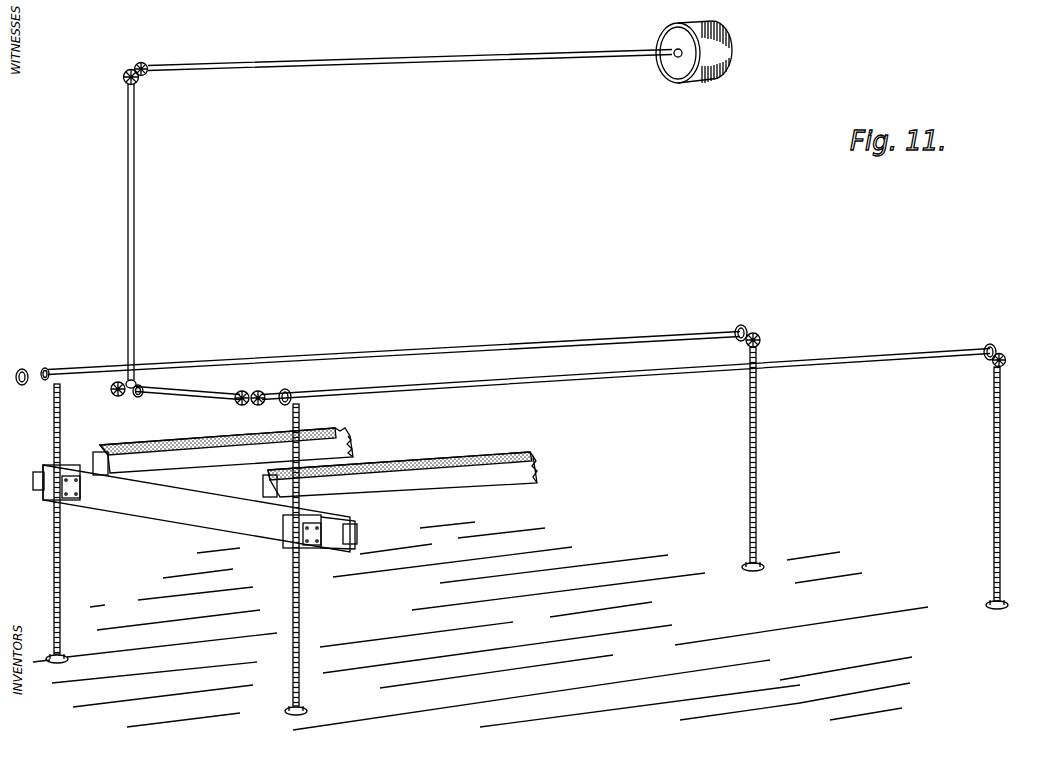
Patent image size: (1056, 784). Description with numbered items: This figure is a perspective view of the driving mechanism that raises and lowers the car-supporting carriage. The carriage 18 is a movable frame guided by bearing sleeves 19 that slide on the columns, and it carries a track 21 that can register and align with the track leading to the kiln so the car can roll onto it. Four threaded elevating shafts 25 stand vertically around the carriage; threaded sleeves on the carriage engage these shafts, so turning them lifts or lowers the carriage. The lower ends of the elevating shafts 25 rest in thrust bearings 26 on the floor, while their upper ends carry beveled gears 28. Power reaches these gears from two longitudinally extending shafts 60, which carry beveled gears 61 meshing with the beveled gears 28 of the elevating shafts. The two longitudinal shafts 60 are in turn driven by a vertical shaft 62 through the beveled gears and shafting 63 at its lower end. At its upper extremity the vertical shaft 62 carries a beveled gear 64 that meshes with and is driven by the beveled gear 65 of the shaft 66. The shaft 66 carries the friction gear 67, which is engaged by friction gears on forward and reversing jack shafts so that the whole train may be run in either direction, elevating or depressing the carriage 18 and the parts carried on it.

The carriage 18 is at (174, 522).
The bearing sleeves 19 is at (34, 468).
The track 21 is at (166, 447).
The threaded elevating shafts 25 is at (61, 552).
The thrust bearings 26 is at (64, 655).
The beveled gears 28 is at (762, 341).
The longitudinally extending shafts 60 is at (441, 351).
The beveled gears 61 is at (48, 371).
The vertical shaft 62 is at (126, 226).
The beveled gears and shafting 63 is at (125, 397).
The beveled gear 64 is at (124, 82).
The beveled gear 65 is at (146, 62).
The shaft 66 is at (375, 59).
The friction gear 67 is at (728, 46).